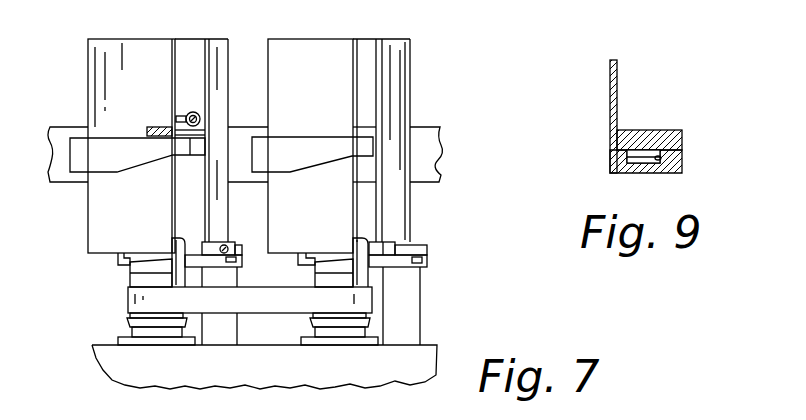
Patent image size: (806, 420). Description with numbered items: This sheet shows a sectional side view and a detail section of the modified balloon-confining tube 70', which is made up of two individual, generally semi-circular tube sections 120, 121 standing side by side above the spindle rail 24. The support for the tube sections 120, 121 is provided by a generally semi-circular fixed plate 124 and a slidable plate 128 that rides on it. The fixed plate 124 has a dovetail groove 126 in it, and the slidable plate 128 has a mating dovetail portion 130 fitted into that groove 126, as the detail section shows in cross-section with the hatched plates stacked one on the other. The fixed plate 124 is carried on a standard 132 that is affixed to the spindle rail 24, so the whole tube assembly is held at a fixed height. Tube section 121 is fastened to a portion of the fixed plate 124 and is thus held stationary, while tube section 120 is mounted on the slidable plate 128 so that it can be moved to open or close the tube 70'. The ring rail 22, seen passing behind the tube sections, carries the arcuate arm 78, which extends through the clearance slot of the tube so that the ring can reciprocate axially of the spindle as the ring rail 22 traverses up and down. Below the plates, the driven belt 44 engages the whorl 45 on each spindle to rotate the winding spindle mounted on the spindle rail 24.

In FIG. 7, the tube 70' is at (251, 132).
In FIG. 7, the tube section 121 is at (272, 58).
In FIG. 7, the tube section 120 is at (405, 88).
In FIG. 9, the tube section 120 is at (610, 77).
In FIG. 7, the ring rail 22 is at (436, 142).
In FIG. 7, the arcuate arm 78 is at (90, 158).
In FIG. 7, the slidable plate 128 is at (241, 242).
In FIG. 9, the slidable plate 128 is at (656, 128).
In FIG. 7, the fixed plate 124 is at (118, 258).
In FIG. 9, the fixed plate 124 is at (684, 170).
In FIG. 7, the whorl 45 is at (140, 268).
In FIG. 7, the standard 132 is at (413, 291).
In FIG. 7, the driven belt 44 is at (272, 305).
In FIG. 7, the spindle rail 24 is at (280, 372).
In FIG. 9, the dovetail portion 130 is at (626, 158).
In FIG. 9, the dovetail groove 126 is at (665, 158).